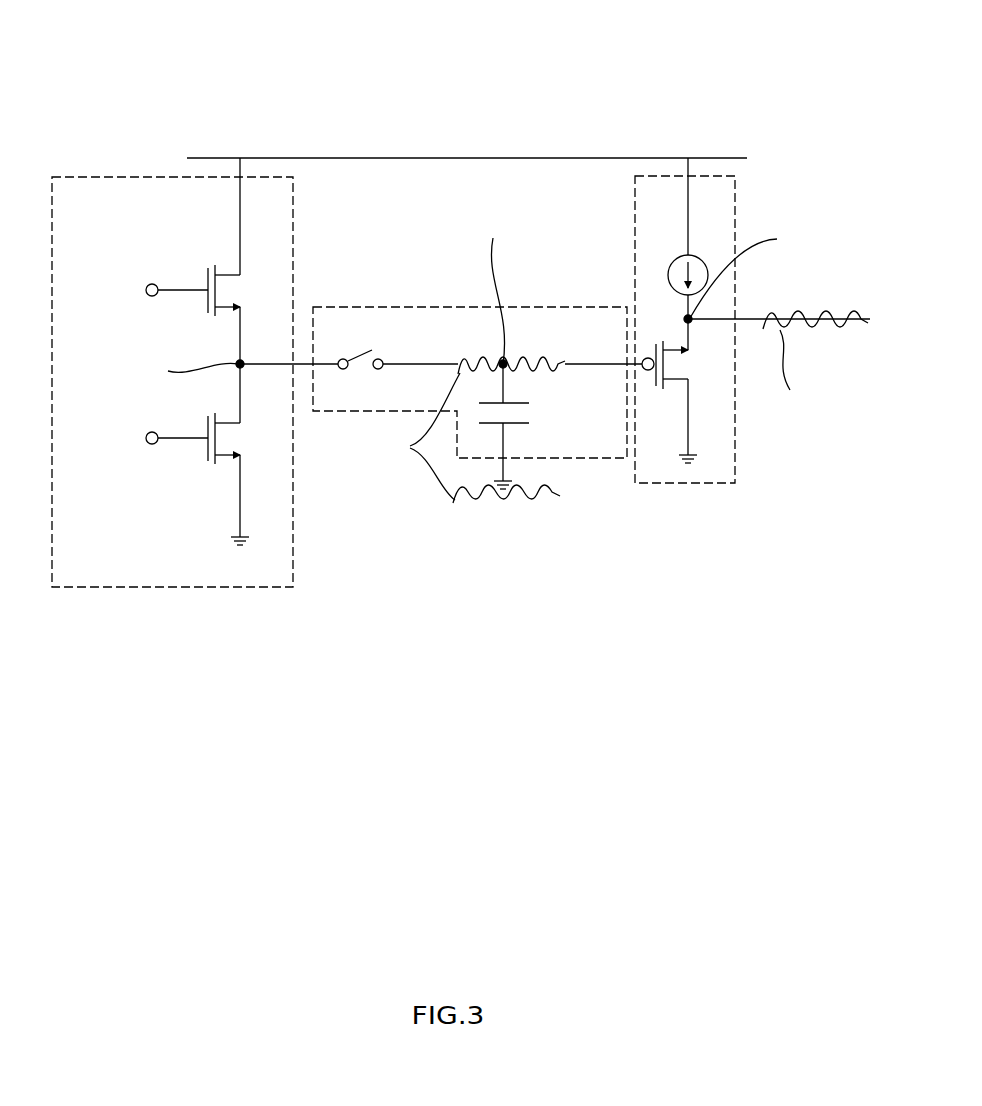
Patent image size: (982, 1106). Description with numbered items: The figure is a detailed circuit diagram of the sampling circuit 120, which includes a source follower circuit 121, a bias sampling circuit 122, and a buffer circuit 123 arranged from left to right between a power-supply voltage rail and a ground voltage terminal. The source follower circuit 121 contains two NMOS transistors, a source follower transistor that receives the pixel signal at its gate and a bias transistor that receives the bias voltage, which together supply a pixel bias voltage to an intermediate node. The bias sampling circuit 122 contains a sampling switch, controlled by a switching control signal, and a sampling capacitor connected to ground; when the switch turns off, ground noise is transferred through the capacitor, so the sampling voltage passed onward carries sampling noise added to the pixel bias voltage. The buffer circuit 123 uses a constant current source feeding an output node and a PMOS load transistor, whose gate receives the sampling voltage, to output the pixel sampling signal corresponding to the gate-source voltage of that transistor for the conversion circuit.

The sampling circuit 120 is at (196, 35).
The source follower circuit 121 is at (92, 177).
The bias sampling circuit 122 is at (385, 307).
The buffer circuit 123 is at (712, 176).